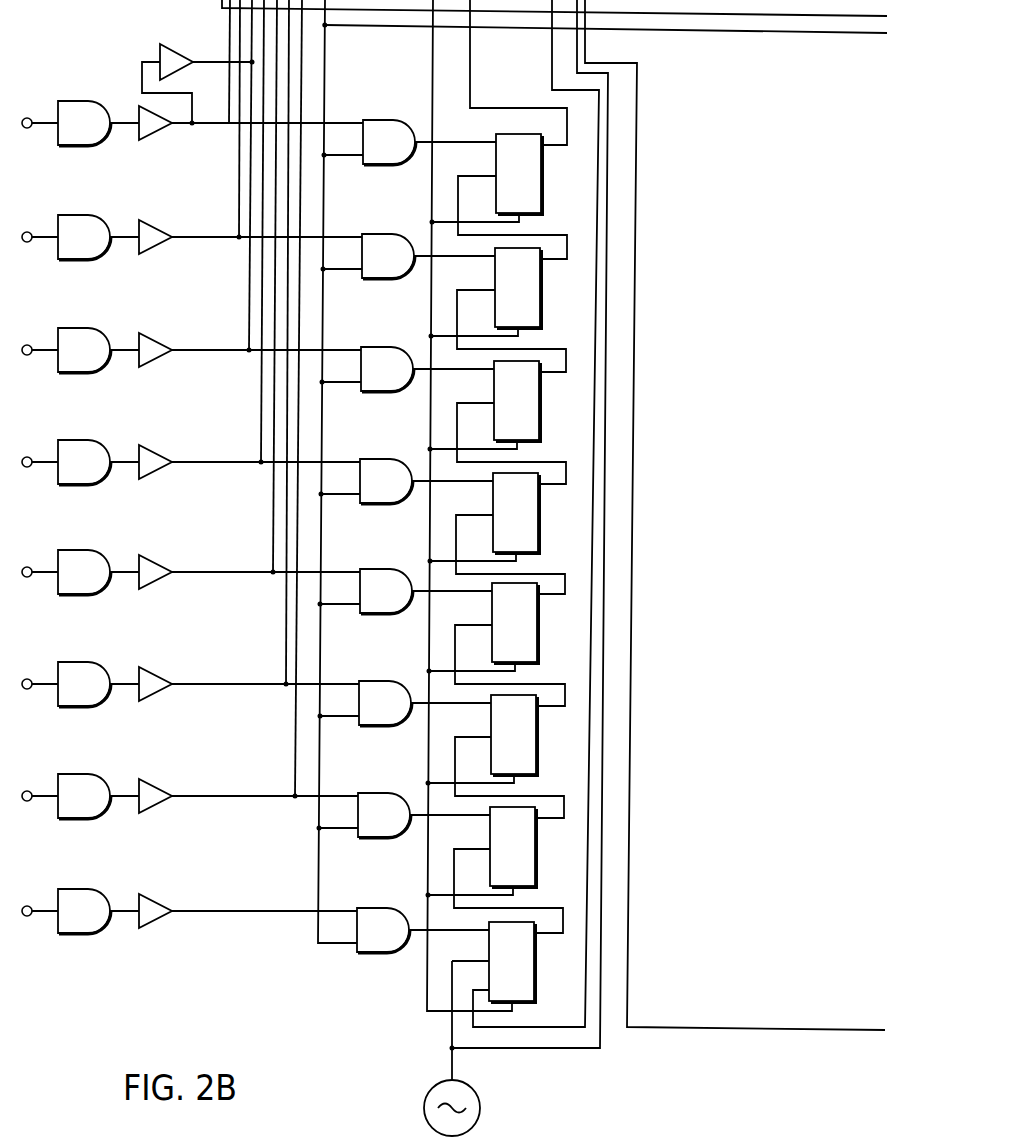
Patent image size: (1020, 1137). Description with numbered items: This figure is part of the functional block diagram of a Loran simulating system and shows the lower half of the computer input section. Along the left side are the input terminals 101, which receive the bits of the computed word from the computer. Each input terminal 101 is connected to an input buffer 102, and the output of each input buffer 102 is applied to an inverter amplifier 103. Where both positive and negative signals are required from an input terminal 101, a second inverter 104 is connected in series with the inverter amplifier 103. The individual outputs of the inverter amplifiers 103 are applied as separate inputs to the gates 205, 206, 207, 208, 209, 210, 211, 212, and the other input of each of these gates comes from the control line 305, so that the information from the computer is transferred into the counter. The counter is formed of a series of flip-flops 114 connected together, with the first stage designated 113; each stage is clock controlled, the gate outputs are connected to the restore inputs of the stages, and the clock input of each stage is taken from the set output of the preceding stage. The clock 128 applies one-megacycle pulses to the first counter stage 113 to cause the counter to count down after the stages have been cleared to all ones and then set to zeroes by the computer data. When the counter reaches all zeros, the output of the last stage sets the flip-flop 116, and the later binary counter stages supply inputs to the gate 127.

The input terminals 101 is at (28, 231).
The input buffers 102 is at (97, 108).
The inverter amplifiers 103 is at (160, 227).
The inverter 104 is at (198, 69).
The first counter stage 113 is at (517, 967).
The flip-flops 114 is at (533, 203).
The flip-flop 116 is at (550, 67).
The gate 127 is at (432, 62).
The clock 128 is at (480, 1124).
The gate 205 is at (409, 129).
The gate 206 is at (408, 243).
The gate 207 is at (407, 356).
The gate 208 is at (406, 468).
The gate 209 is at (406, 578).
The gate 210 is at (405, 690).
The gate 211 is at (404, 802).
The gate 212 is at (403, 917).
The control line 305 is at (800, 36).